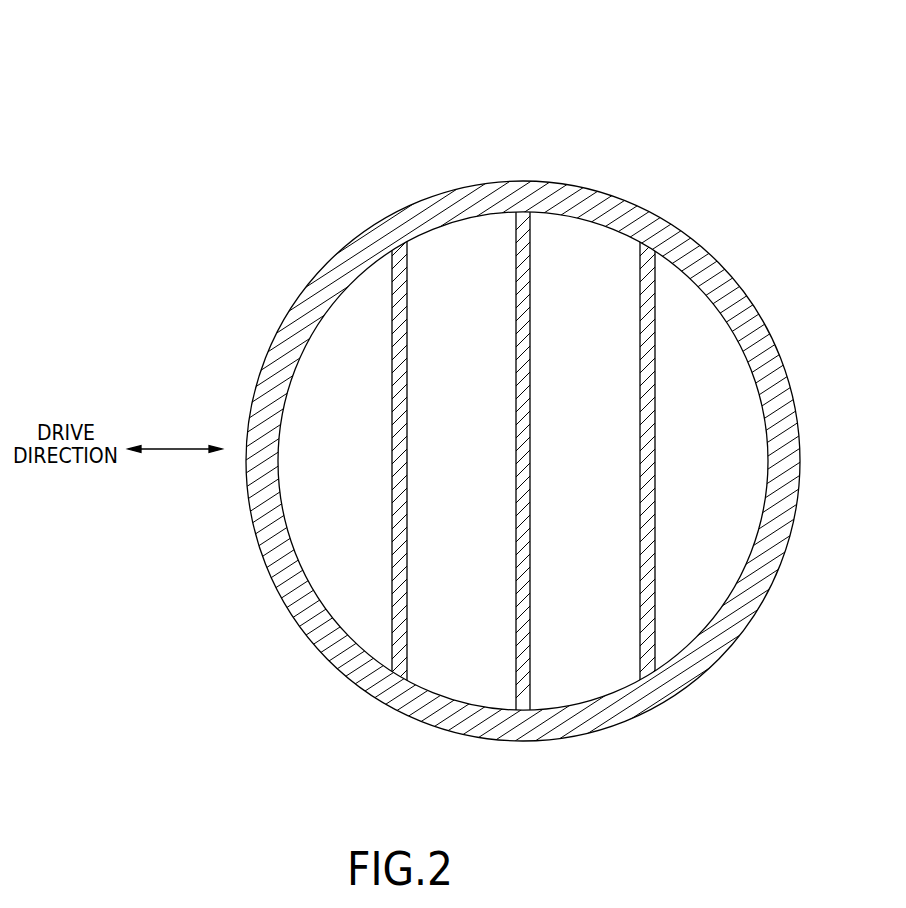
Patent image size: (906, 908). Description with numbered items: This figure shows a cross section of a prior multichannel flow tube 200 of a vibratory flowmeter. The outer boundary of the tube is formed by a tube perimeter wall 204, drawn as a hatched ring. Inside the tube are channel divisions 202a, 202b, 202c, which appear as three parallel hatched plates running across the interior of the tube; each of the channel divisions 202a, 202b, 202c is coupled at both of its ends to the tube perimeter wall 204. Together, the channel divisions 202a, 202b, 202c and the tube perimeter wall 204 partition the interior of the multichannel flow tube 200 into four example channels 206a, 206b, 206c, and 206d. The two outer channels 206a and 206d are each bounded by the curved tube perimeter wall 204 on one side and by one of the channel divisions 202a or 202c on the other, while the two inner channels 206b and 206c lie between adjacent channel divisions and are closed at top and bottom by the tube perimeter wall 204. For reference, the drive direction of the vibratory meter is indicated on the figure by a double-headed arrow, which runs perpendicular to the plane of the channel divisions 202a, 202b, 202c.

The multichannel flow tube 200 is at (266, 120).
The channel division 202a is at (402, 275).
The channel division 202b is at (525, 230).
The channel division 202c is at (647, 270).
The tube perimeter wall 204 is at (741, 320).
The channel 206a is at (341, 500).
The channel 206b is at (453, 525).
The channel 206c is at (581, 525).
The channel 206d is at (698, 498).